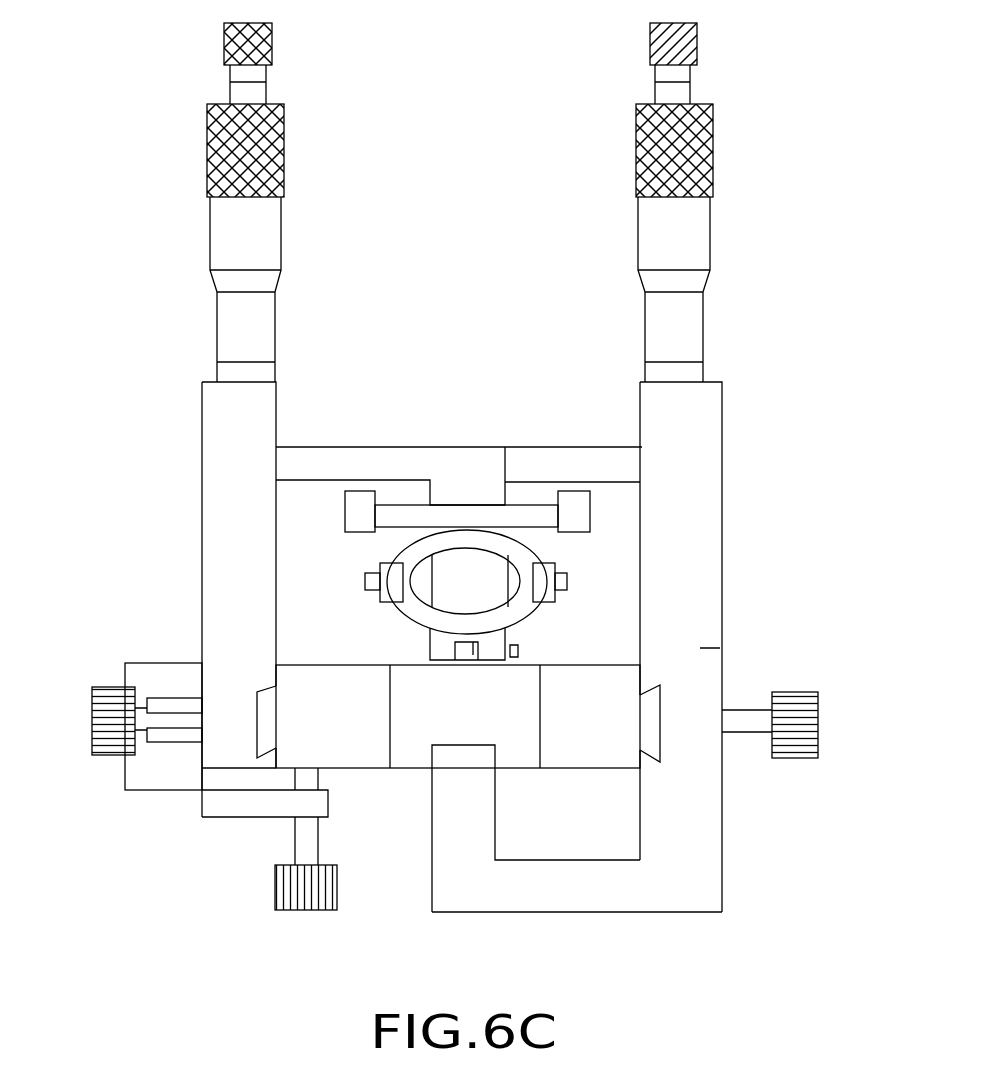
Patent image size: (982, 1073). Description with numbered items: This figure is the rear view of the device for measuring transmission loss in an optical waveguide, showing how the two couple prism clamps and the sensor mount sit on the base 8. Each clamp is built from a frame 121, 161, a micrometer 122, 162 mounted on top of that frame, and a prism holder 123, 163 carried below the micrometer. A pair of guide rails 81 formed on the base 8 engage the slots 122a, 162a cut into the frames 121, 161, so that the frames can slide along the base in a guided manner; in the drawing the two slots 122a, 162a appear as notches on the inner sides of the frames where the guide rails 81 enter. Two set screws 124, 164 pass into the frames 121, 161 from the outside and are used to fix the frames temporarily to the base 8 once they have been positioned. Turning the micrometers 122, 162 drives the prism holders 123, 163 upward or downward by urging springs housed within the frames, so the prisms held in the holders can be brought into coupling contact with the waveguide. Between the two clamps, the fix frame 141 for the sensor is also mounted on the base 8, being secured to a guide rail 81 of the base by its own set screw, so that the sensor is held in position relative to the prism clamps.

The micrometer 162 is at (285, 150).
The micrometer 122 is at (715, 150).
The frame 161 is at (280, 428).
The frame 121 is at (725, 455).
The prism holder 163 is at (417, 460).
The prism holder 123 is at (570, 458).
The base 8 is at (322, 677).
The slot 162a is at (257, 718).
The slot 122a is at (648, 722).
The guide rail 81 is at (265, 727).
The set screw 164 is at (88, 728).
The set screw 124 is at (818, 723).
The fix frame 141 is at (710, 838).